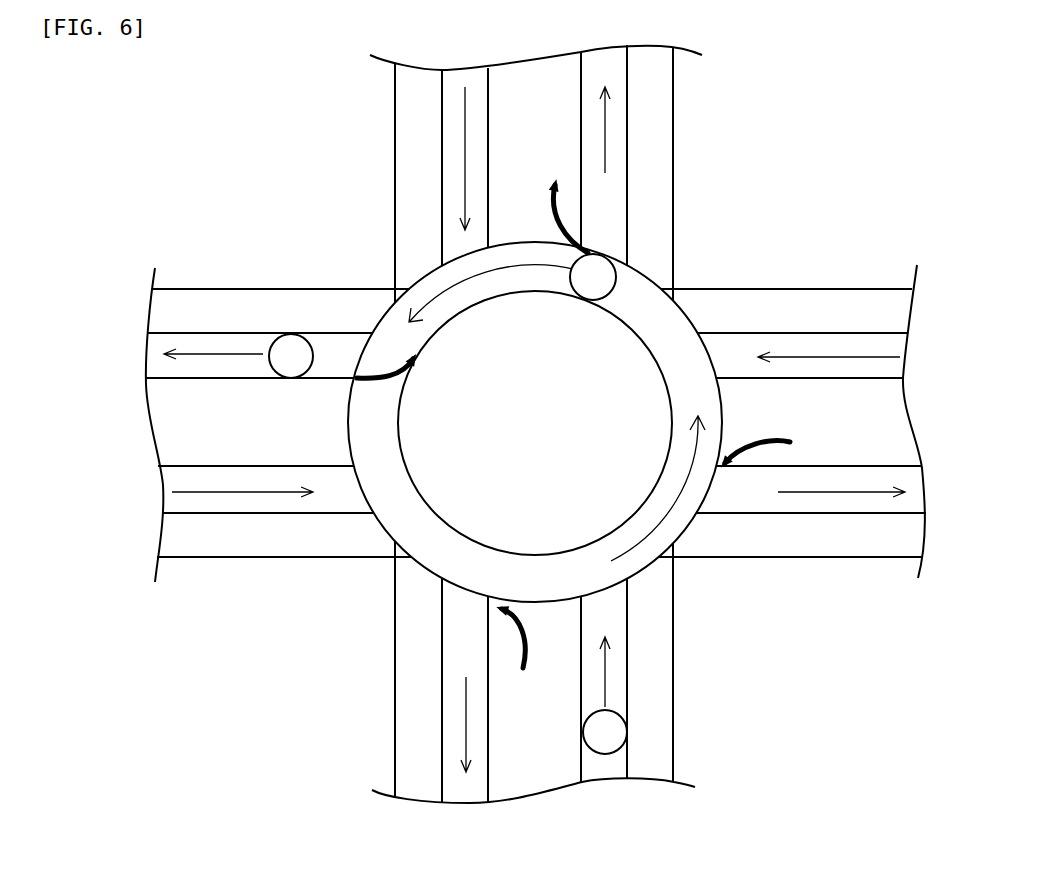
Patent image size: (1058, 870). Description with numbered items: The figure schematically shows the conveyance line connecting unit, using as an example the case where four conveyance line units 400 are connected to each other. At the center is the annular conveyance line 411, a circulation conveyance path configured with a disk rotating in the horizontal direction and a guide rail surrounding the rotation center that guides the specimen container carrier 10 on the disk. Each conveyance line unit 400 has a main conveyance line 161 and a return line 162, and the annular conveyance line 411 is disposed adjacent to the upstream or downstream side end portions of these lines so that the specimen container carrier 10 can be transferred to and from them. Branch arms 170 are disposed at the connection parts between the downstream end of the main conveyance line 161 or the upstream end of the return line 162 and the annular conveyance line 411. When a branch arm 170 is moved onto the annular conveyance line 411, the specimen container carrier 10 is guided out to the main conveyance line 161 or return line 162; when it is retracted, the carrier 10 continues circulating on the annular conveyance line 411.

The specimen container carrier 10 is at (610, 740).
The main conveyance line 161 is at (628, 228).
The return line 162 is at (441, 140).
The branch arm 170 is at (553, 202).
The conveyance line unit 400 is at (690, 96).
The annular conveyance line 411 is at (706, 326).